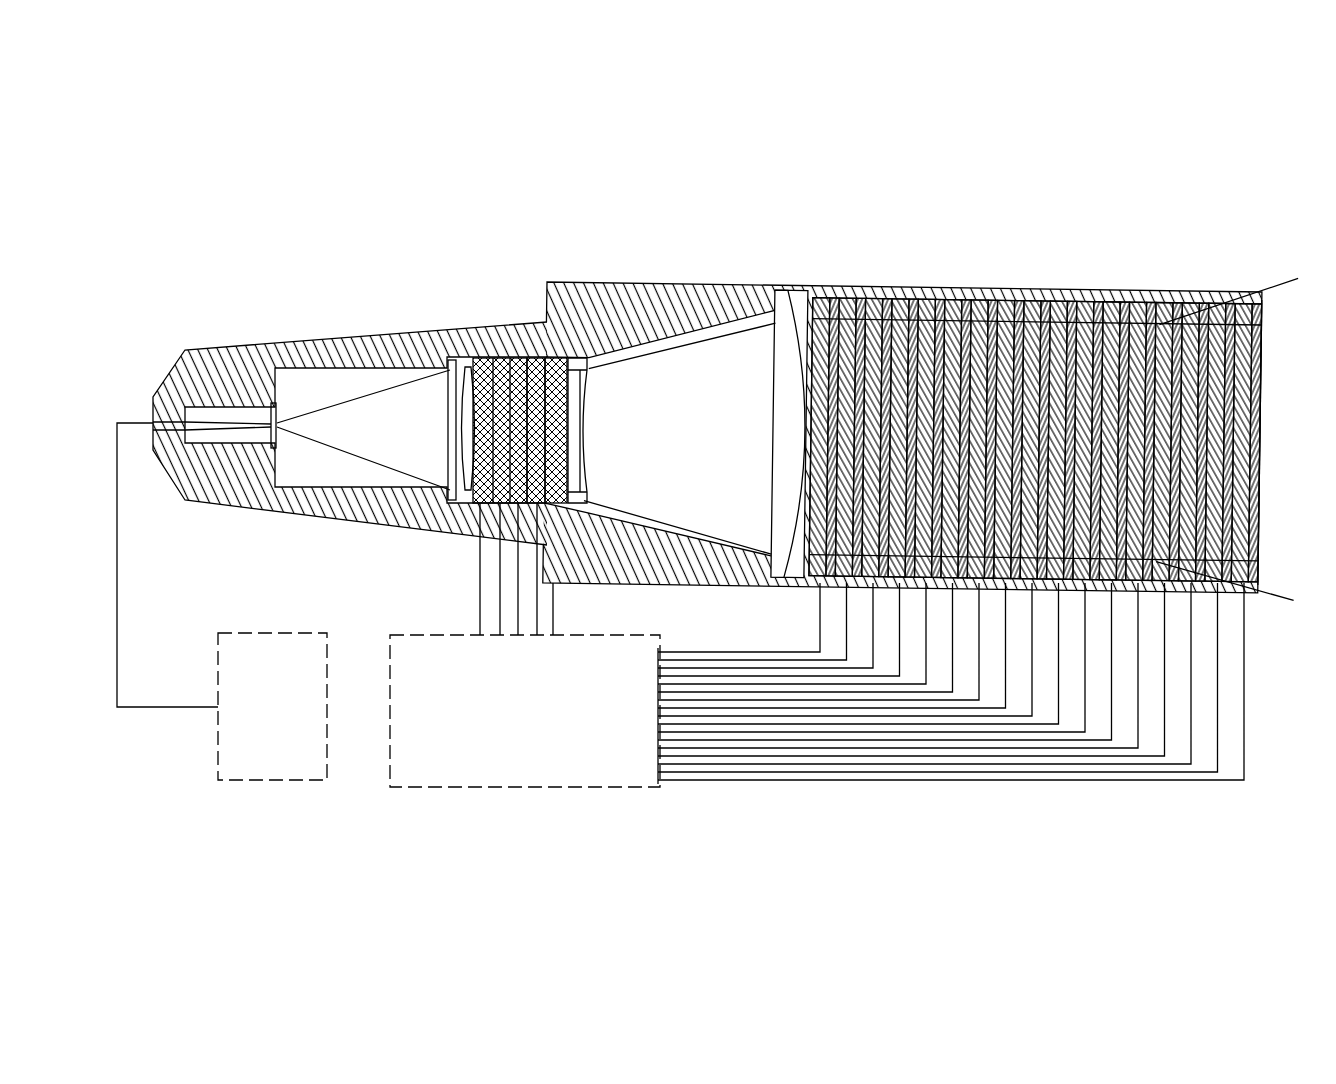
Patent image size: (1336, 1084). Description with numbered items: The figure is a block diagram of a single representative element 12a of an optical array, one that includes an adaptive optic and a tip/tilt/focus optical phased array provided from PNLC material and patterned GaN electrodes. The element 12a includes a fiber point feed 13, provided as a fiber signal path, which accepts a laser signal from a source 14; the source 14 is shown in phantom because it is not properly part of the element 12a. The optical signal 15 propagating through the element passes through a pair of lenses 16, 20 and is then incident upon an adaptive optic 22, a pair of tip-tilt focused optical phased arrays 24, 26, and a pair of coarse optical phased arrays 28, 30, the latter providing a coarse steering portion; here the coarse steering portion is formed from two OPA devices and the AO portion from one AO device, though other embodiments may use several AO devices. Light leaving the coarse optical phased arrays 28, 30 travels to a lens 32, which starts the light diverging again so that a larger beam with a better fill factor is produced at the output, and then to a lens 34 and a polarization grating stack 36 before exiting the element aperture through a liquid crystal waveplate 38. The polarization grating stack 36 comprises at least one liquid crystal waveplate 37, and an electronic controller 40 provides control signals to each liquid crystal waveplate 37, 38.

The element 12a is at (1168, 165).
The fiber point feed 13 is at (153, 423).
The source 14 is at (272, 706).
The optical signal 15 is at (348, 448).
The lens 16 is at (276, 410).
The lens 20 is at (437, 358).
The adaptive optic 22 is at (447, 357).
The tip-tilt focused optical phased array 24 is at (472, 362).
The tip-tilt focused optical phased array 26 is at (518, 360).
The coarse optical phased array 28 is at (537, 360).
The coarse optical phased array 30 is at (556, 360).
The lens 32 is at (581, 366).
The lens 34 is at (780, 290).
The polarization grating stack 36 is at (1258, 221).
The liquid crystal waveplate 37 is at (947, 290).
The liquid crystal waveplate 38 is at (1263, 405).
The electronic controller 40 is at (817, 645).